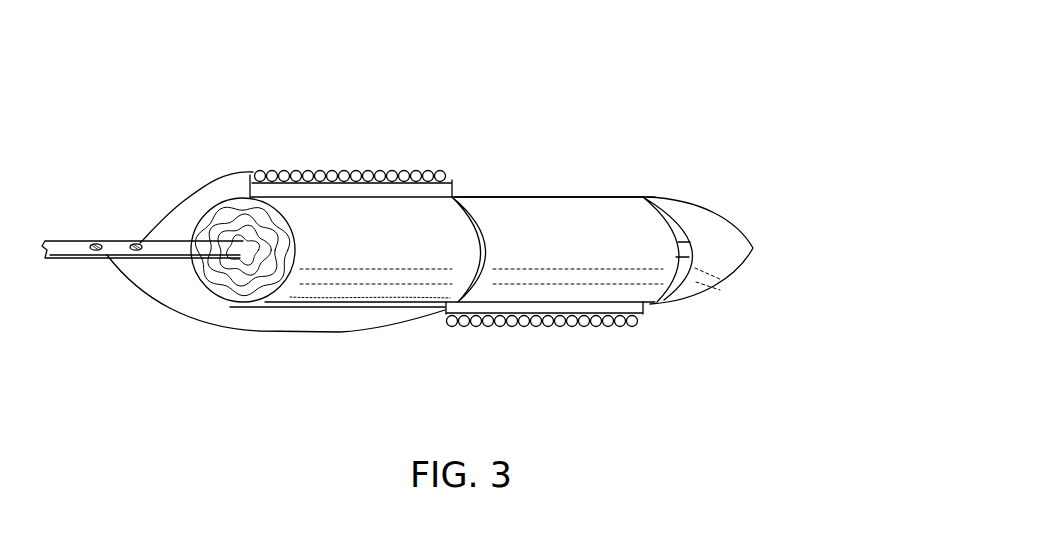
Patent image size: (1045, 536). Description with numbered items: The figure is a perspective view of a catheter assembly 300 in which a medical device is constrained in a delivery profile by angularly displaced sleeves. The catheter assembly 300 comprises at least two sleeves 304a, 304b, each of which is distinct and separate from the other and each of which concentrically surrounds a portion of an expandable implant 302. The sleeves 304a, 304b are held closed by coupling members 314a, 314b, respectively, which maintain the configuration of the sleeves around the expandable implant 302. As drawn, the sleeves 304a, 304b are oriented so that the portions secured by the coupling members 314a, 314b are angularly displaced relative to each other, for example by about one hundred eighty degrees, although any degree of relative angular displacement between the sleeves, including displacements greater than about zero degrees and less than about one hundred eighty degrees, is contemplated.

The catheter assembly 300 is at (656, 91).
The expandable implant 302 is at (221, 293).
The sleeve 304a is at (343, 306).
The sleeve 304b is at (545, 197).
The coupling member 314a is at (343, 170).
The coupling member 314b is at (553, 328).